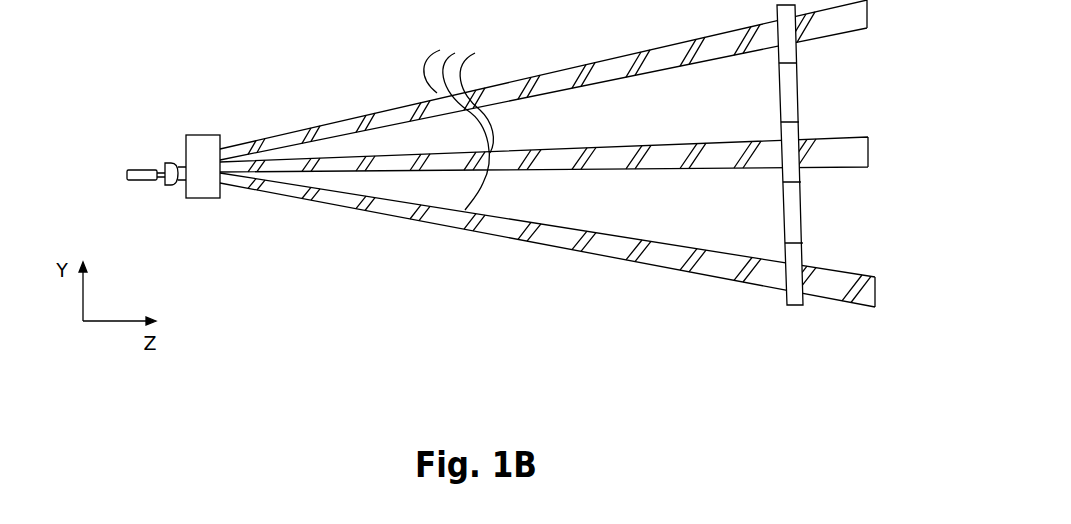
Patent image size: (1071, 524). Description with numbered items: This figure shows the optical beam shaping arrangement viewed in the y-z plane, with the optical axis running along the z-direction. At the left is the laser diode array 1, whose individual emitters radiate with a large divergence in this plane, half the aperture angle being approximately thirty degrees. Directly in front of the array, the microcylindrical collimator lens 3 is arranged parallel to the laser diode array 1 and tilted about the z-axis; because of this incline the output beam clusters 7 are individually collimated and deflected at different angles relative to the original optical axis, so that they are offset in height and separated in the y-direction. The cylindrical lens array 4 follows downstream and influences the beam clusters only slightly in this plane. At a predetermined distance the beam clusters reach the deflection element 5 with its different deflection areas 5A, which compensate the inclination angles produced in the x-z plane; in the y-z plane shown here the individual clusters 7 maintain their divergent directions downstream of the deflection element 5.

The laser diode array 1 is at (156, 169).
The microcylindrical collimator lens 3 is at (171, 186).
The cylindrical lens array 4 is at (202, 135).
The deflection element 5 is at (794, 308).
The deflection areas 5A is at (802, 105).
The output beam clusters 7 is at (459, 112).